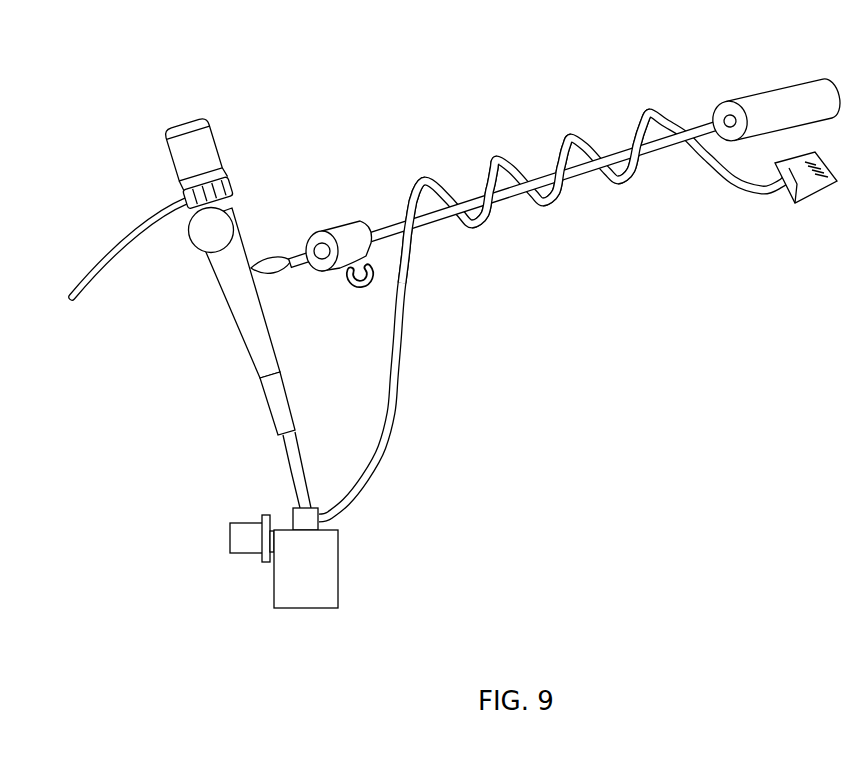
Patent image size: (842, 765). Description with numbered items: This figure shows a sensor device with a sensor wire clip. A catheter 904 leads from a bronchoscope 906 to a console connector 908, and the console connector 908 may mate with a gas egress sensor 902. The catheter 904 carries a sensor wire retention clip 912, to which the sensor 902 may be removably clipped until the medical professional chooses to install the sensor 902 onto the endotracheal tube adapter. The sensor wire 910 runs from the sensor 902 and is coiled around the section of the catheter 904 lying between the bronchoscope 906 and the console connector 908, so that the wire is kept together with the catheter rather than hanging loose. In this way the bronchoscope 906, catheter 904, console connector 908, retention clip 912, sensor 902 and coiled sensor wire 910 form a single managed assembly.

The gas egress sensor 902 is at (292, 522).
The catheter 904 is at (613, 148).
The bronchoscope 906 is at (168, 153).
The console connector 908 is at (780, 92).
The sensor wire 910 is at (386, 414).
The sensor wire retention clip 912 is at (335, 222).